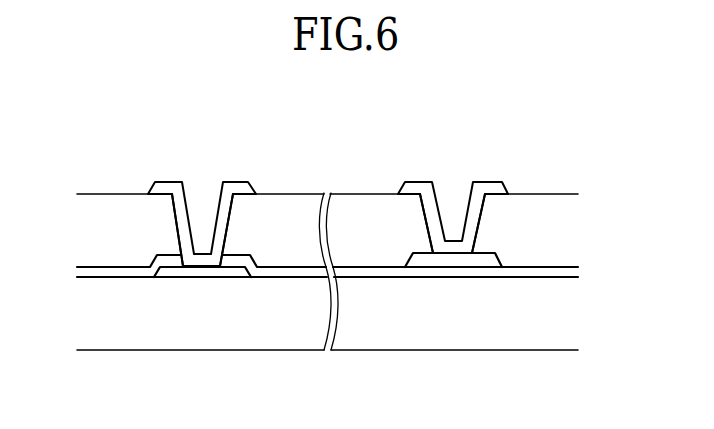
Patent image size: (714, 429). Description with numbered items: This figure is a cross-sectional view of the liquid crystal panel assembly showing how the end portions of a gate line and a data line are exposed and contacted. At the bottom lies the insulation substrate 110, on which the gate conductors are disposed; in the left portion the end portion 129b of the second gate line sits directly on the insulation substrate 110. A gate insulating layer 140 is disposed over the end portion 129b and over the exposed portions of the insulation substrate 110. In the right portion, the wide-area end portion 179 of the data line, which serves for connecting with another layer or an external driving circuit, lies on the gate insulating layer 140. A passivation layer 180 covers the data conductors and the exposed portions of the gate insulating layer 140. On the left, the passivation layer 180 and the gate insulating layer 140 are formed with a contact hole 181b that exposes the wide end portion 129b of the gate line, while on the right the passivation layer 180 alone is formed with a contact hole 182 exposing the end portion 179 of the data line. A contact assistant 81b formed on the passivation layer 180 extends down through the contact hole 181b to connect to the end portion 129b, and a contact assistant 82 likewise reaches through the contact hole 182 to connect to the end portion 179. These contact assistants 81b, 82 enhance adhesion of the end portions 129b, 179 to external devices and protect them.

The insulation substrate 110 is at (275, 330).
The gate insulating layer 140 is at (113, 272).
The end portion 129b is at (203, 272).
The end portion 179 is at (450, 253).
The passivation layer 180 is at (106, 220).
The contact assistant 81b is at (166, 187).
The contact assistant 82 is at (415, 190).
The contact hole 181b is at (178, 223).
The contact hole 182 is at (429, 222).